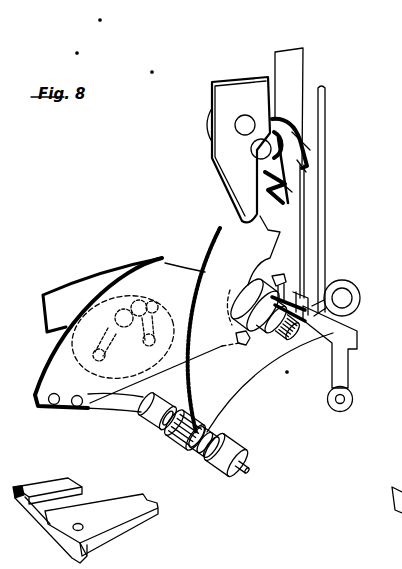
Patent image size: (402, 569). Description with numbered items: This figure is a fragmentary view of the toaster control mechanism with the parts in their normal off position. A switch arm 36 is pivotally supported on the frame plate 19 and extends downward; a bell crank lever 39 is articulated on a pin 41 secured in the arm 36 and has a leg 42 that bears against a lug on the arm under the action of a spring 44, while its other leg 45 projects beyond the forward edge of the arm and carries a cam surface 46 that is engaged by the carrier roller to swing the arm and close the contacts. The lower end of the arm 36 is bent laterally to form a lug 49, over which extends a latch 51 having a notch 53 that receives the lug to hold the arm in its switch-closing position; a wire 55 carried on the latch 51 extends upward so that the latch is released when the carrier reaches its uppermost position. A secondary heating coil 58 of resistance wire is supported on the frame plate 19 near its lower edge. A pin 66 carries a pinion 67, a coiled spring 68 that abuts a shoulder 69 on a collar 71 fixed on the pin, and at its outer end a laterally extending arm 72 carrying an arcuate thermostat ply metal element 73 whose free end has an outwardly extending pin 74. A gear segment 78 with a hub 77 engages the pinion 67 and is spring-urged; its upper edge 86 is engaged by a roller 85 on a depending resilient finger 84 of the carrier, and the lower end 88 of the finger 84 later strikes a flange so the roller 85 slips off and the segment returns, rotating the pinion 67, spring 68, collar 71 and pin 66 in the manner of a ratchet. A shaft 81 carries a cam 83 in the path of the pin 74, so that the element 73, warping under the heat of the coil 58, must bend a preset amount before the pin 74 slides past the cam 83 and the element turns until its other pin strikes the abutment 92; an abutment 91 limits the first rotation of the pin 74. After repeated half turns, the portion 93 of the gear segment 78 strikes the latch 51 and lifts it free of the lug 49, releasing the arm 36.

The frame plate 19 is at (63, 297).
The switch arm 36 is at (288, 57).
The bell crank lever 39 is at (283, 119).
The pin 41 is at (256, 148).
The leg 42 is at (287, 188).
The spring 44 is at (290, 177).
The leg 45 is at (300, 172).
The cam surface 46 is at (304, 150).
The lug 49 is at (300, 297).
The latch 51 is at (358, 341).
The notch 53 is at (272, 280).
The wire 55 is at (327, 95).
The coil 58 is at (123, 337).
The pin 66 is at (244, 475).
The pinion 67 is at (180, 445).
The coiled spring 68 is at (197, 452).
The shoulder 69 is at (206, 458).
The collar 71 is at (228, 447).
The arm 72 is at (107, 405).
The thermostat ply metal element 73 is at (178, 273).
The pin 74 is at (249, 344).
The hub 77 is at (353, 287).
The gear segment 78 is at (211, 382).
The shaft 81 is at (266, 344).
The cam 83 is at (252, 282).
The finger 84 is at (222, 92).
The roller 85 is at (204, 126).
The upper edge 86 is at (280, 230).
The lower end 88 is at (262, 180).
The abutment 91 is at (91, 510).
The abutment 92 is at (50, 488).
The portion 93 is at (298, 376).